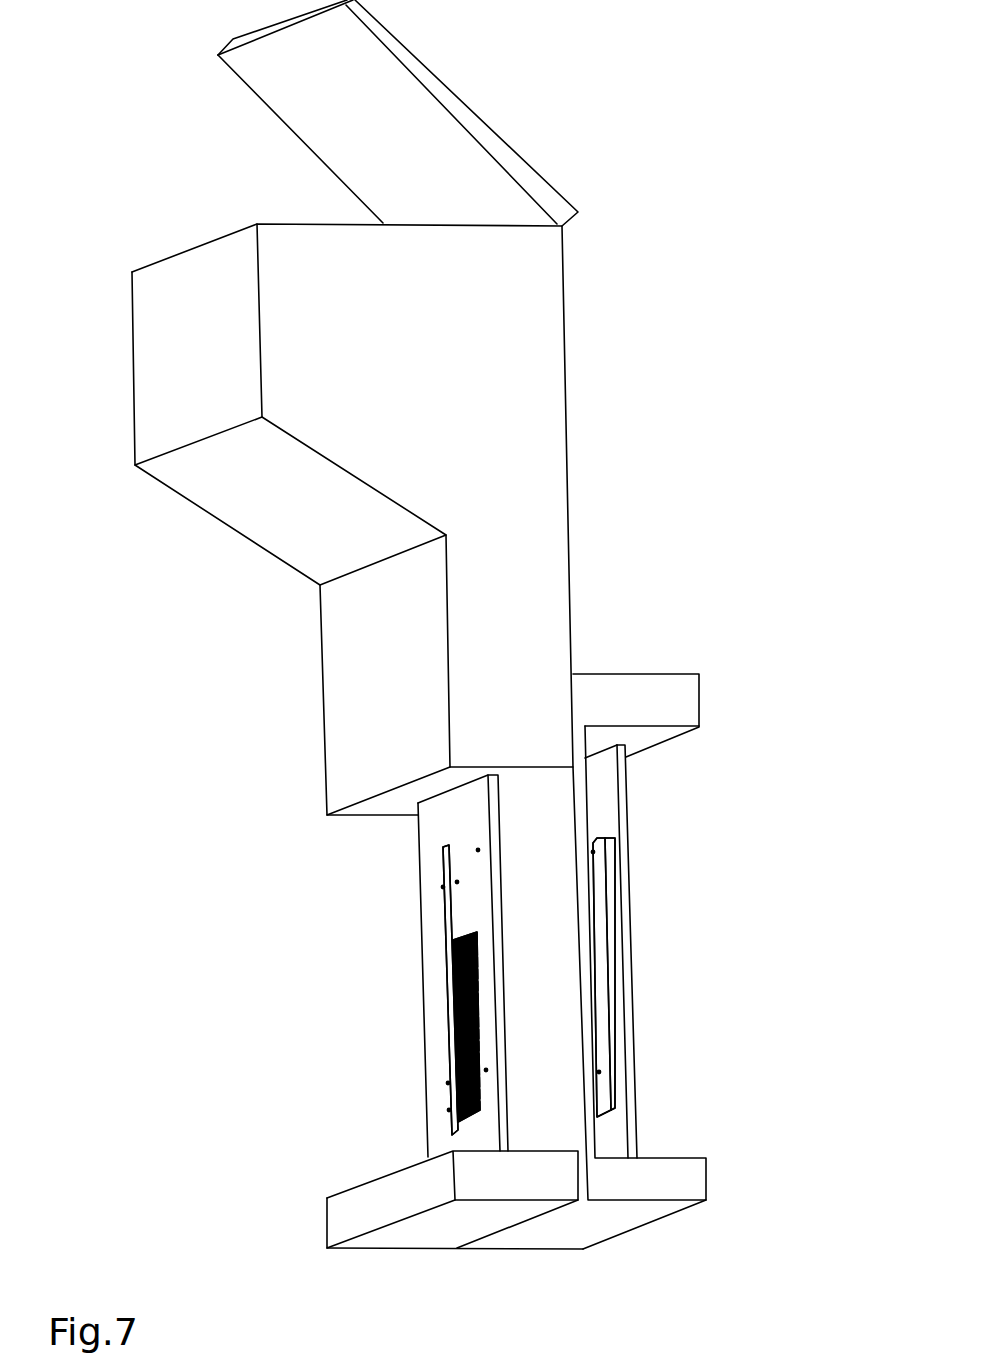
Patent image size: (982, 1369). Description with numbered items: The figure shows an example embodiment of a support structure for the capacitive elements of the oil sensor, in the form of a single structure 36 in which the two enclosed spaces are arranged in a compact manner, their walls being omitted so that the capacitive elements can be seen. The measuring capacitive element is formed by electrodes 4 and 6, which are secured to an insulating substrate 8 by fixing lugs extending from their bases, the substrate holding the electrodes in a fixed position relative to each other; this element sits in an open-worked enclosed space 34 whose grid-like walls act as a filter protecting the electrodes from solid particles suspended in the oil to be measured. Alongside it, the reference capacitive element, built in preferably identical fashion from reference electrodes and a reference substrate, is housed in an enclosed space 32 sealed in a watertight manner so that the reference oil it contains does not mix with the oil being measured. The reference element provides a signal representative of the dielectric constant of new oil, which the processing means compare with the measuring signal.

The single structure 36 is at (682, 208).
The open-worked enclosed space 34 is at (740, 760).
The enclosed space 32 is at (342, 966).
The insulating substrate 8 is at (613, 803).
The electrode 4 is at (617, 1003).
The electrode 6 is at (617, 1003).